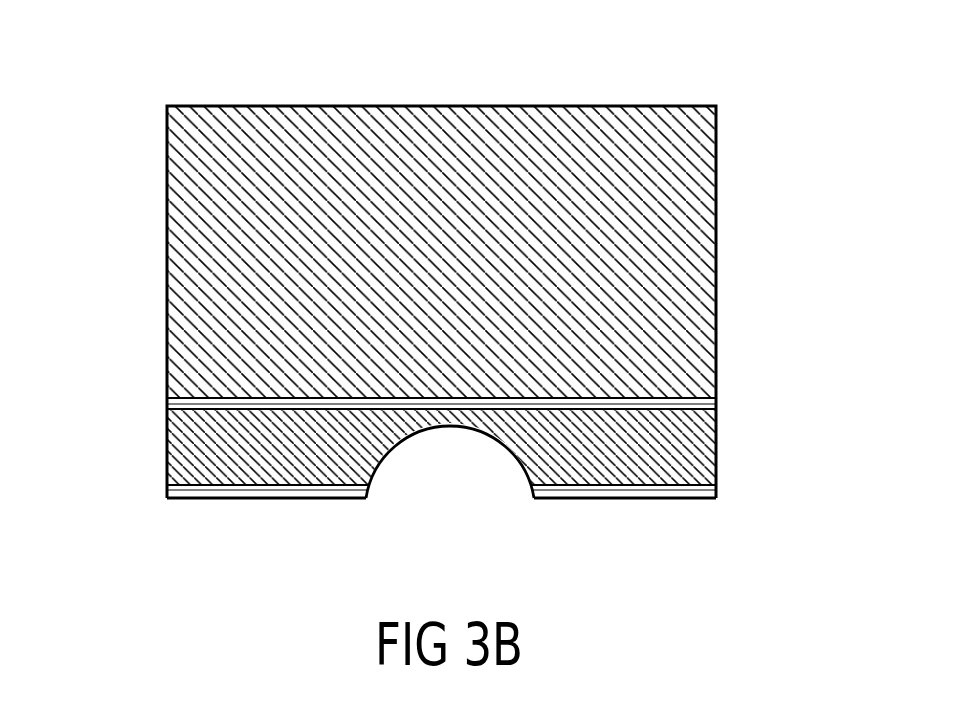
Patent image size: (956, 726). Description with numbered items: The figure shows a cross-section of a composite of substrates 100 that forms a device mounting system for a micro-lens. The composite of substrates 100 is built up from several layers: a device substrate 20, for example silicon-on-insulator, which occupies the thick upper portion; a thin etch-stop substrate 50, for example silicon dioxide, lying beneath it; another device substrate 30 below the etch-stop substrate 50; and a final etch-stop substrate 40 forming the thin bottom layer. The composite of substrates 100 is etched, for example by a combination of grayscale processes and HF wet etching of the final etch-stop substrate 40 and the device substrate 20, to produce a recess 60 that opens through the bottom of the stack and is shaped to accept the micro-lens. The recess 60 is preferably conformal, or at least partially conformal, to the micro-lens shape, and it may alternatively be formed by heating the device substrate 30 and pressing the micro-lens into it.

The composite of substrates 100 is at (450, 305).
The device substrate 20 is at (297, 106).
The device substrate 30 is at (167, 442).
The final etch-stop substrate 40 is at (663, 497).
The etch-stop substrate 50 is at (716, 398).
The recess 60 is at (442, 467).